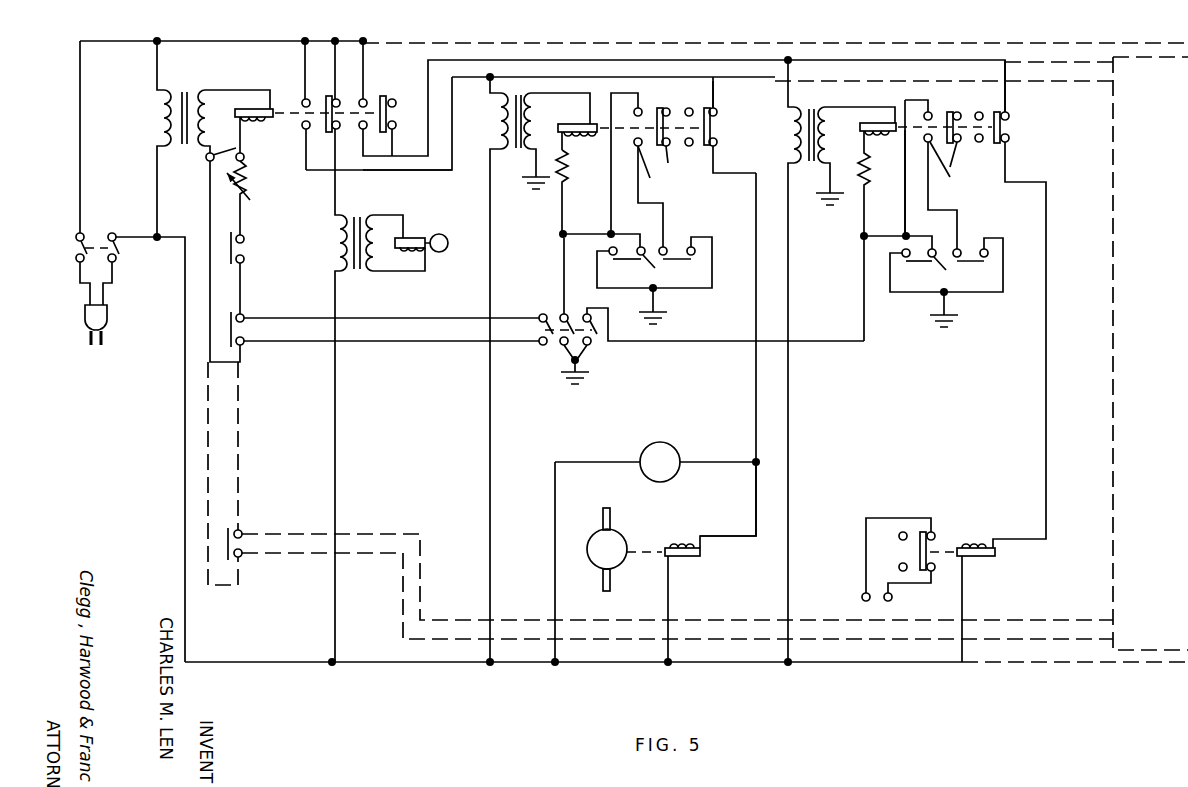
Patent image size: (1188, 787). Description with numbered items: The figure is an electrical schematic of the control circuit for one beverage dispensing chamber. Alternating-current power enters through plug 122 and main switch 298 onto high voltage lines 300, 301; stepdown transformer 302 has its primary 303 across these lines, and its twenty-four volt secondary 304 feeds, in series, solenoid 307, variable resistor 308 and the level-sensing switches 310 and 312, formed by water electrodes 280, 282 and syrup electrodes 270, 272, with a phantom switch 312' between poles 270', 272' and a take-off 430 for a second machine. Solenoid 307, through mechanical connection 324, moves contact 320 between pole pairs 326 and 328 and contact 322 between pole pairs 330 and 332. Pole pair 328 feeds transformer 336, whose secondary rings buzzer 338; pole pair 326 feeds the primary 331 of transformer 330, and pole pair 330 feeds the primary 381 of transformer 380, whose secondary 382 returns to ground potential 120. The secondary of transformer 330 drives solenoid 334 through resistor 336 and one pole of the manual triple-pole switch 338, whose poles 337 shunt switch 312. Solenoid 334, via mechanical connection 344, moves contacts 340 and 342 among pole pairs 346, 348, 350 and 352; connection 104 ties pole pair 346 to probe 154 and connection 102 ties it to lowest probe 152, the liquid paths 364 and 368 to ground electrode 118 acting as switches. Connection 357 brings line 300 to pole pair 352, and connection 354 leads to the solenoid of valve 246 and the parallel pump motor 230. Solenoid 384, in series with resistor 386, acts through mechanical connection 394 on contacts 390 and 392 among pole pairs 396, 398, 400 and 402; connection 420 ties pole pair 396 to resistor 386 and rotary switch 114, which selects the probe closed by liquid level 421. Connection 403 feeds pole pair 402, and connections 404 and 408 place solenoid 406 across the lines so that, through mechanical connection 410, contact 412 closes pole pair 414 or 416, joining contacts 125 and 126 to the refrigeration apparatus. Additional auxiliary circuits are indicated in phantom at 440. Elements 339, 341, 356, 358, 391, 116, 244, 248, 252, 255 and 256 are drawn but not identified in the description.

The high voltage line 300 is at (245, 42).
The high voltage line 301 is at (380, 664).
The stepdown transformer 302 is at (184, 92).
The primary 303 is at (161, 108).
The secondary 304 is at (196, 126).
The solenoid 307 is at (246, 111).
The variable resistor 308 is at (250, 186).
The switch 310 is at (229, 243).
The switch 312 is at (260, 329).
The switch contact 320 is at (319, 102).
The switch contact 322 is at (380, 96).
The mechanical connection 324 is at (296, 119).
The first pair of poles 326 is at (312, 128).
The second pair of poles 328 is at (342, 100).
The step-down transformer 330 is at (352, 135).
The primary 331 is at (498, 120).
The fourth pair of poles 332 is at (396, 118).
The solenoid 334 is at (590, 133).
The step-down transformer 336 is at (351, 214).
The poles 337 is at (541, 347).
The electrical buzzer 338 is at (456, 233).
The contact 339 is at (561, 352).
The switch contact 340 is at (650, 108).
The contact 341 is at (592, 346).
The switch contact 342 is at (716, 127).
The mechanical connection 344 is at (627, 125).
The pole pair 346 is at (660, 171).
The pole pair 348 is at (679, 161).
The pole pair 350 is at (690, 146).
The pole pair 352 is at (716, 147).
The connection 354 is at (754, 360).
The conductor 356 is at (393, 170).
The connection 357 is at (713, 80).
The conductor 358 is at (595, 225).
The switch connection 364 is at (630, 259).
The conducting path 368 is at (680, 262).
The step-down transformer 380 is at (813, 147).
The primary 381 is at (795, 124).
The secondary 382 is at (826, 159).
The solenoid 384 is at (872, 127).
The resistor 386 is at (866, 184).
The switch contact 390 is at (946, 112).
The conductor 391 is at (907, 97).
The switch contact 392 is at (1010, 125).
The mechanical connection 394 is at (920, 127).
The pole pair 396 is at (952, 172).
The pole pair 398 is at (967, 160).
The pole pair 400 is at (983, 142).
The pole pair 402 is at (1010, 141).
The electrical connection 403 is at (1008, 97).
The electrical connection 404 is at (1047, 285).
The solenoid 406 is at (990, 553).
The electrical connection 408 is at (964, 585).
The mechanical connection 410 is at (948, 556).
The switch contact 412 is at (900, 551).
The pole pair 414 is at (933, 534).
The pole pair 416 is at (887, 534).
The electrical connection 420 is at (895, 224).
The liquid level 421 is at (928, 265).
The take off for auxiliary control circuit 430 is at (212, 167).
The additional auxiliary control circuits 440 is at (1112, 157).
The connection 102 is at (664, 215).
The electrical connection 104 is at (612, 217).
The rotary switch 114 is at (950, 271).
The conductor 116 is at (925, 226).
The electrode 118 is at (608, 250).
The ground potential 120 is at (532, 191).
The plug 122 is at (97, 338).
The contact 125 is at (862, 595).
The contact 126 is at (891, 600).
The probe 152 is at (666, 245).
The probe 154 is at (644, 258).
The pump motor 230 is at (668, 473).
The solenoid lead 244 is at (607, 595).
The valve 246 is at (596, 538).
The solenoid lead 248 is at (605, 508).
The relay coil 252 is at (703, 553).
The conductor 255 is at (742, 536).
The conductor 256 is at (669, 588).
The electrode 270 is at (387, 309).
The electrode 272 is at (387, 351).
The pole 270' is at (660, 491).
The pole 272' is at (673, 594).
The switch 312' is at (260, 544).
The electrode 280 is at (245, 240).
The electrode 282 is at (244, 262).
The main switch 298 is at (74, 250).